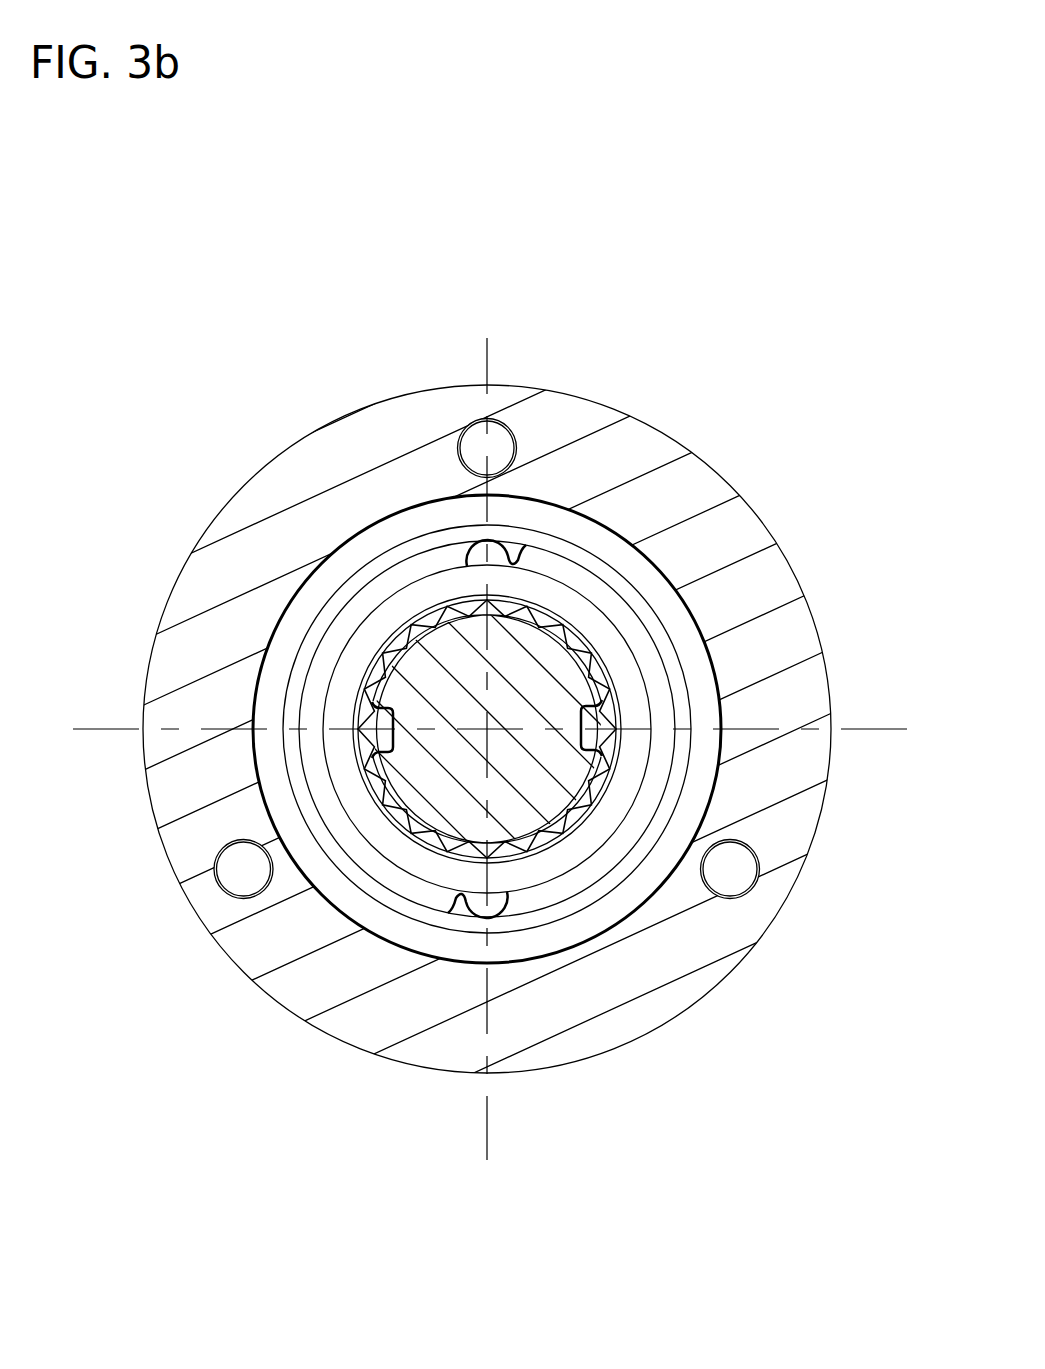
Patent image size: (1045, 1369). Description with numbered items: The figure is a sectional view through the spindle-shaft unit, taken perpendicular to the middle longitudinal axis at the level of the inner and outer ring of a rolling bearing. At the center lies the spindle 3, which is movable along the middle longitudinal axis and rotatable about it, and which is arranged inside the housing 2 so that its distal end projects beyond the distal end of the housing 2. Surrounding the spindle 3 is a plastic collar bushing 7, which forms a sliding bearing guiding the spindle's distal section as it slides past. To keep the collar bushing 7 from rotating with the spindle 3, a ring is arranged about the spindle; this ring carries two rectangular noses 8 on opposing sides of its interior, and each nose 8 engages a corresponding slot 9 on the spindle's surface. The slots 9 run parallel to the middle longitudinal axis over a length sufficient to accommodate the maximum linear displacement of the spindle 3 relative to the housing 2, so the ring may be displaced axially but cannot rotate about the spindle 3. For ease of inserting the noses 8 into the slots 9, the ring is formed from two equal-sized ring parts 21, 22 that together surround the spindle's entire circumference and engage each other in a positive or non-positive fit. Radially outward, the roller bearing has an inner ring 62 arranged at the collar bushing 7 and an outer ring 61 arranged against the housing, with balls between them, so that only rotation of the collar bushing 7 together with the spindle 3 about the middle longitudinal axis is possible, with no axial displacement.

The housing 2 is at (708, 523).
The spindle 3 is at (427, 663).
The collar bushing 7 is at (600, 673).
The nose 8 is at (602, 720).
The slot 9 is at (578, 728).
The ring part 21 is at (637, 753).
The ring part 22 is at (312, 685).
The outer ring 61 is at (702, 783).
The inner ring 62 is at (600, 828).